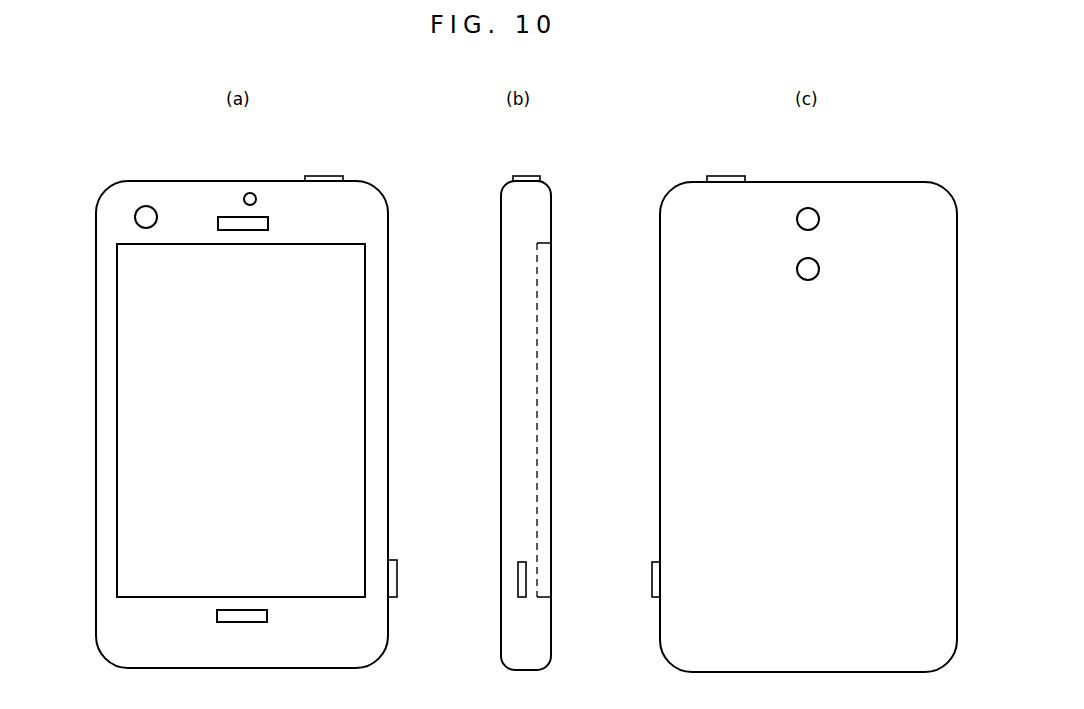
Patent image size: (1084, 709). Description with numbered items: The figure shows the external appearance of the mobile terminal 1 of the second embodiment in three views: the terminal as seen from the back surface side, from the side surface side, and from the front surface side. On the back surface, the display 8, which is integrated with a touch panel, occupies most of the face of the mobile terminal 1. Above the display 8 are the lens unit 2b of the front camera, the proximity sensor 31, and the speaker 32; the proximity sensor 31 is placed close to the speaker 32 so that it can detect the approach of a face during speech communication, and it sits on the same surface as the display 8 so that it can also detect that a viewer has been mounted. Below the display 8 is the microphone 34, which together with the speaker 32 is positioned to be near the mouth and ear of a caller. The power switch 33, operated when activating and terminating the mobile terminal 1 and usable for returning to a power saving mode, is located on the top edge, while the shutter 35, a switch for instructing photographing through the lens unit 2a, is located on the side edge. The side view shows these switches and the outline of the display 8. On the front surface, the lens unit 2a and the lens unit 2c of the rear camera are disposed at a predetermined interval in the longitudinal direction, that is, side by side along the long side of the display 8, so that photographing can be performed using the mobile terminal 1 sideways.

The mobile terminal 1 is at (211, 180).
The display 8 is at (302, 597).
The lens unit of the rear camera 2a is at (820, 217).
The lens unit of the front camera 2b is at (135, 219).
The lens unit of the rear camera 2c is at (820, 267).
The proximity sensor 31 is at (257, 199).
The speaker 32 is at (268, 222).
The power switch 33 is at (324, 176).
The microphone 34 is at (217, 616).
The shutter 35 is at (397, 580).